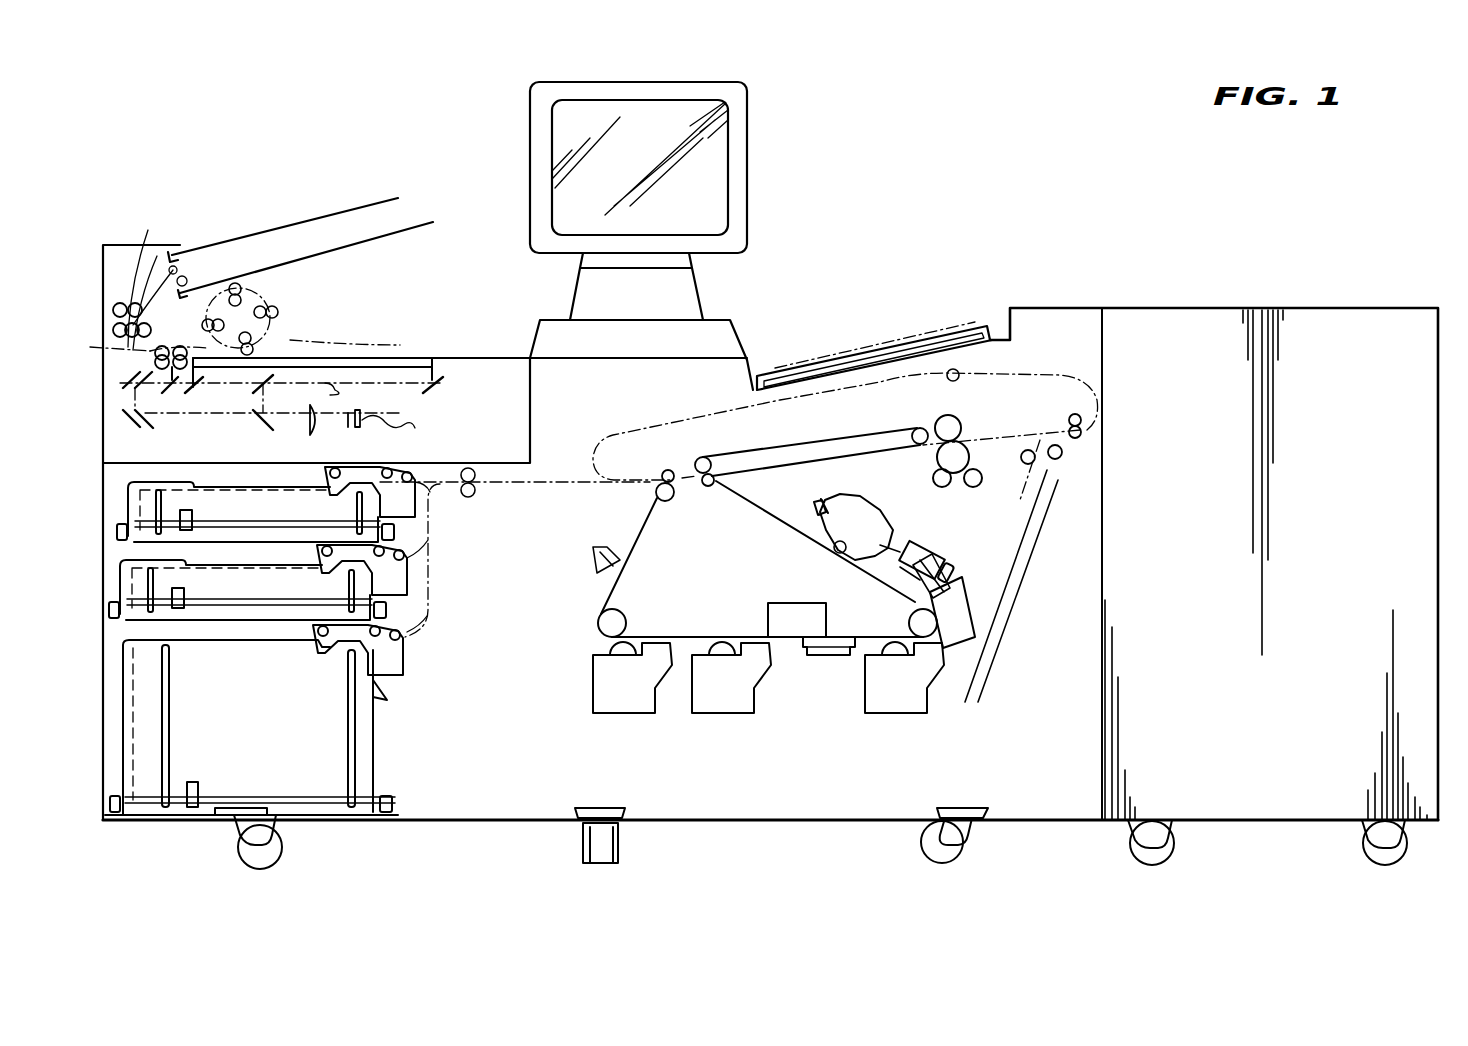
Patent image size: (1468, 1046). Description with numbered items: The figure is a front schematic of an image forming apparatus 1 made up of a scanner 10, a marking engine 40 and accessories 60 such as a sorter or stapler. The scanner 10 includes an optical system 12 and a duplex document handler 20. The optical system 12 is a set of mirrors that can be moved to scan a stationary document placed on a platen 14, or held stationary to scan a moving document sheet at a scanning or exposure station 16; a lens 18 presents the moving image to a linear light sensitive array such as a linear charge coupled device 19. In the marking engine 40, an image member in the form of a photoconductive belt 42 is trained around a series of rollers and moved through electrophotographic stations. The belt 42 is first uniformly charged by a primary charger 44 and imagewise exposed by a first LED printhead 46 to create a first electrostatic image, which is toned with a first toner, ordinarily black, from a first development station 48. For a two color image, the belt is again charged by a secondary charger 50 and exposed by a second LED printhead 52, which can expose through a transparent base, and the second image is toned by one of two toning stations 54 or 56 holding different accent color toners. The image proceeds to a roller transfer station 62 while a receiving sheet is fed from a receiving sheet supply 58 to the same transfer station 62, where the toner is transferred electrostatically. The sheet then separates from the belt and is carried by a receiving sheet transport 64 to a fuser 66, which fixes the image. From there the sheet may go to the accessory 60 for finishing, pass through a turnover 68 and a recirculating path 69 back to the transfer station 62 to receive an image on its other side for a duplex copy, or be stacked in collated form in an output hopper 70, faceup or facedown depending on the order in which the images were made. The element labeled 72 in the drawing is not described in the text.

The image forming apparatus 1 is at (1017, 128).
The scanner 10 is at (222, 212).
The optical system 12 is at (125, 403).
The platen 14 is at (388, 358).
The scanning or exposure station 16 is at (168, 335).
The lens 18 is at (333, 383).
The linear charge coupled device 19 is at (407, 428).
The duplex document handler 20 is at (117, 274).
The marking engine 40 is at (1035, 795).
The photoconductive belt 42 is at (753, 497).
The primary charger 44 is at (918, 545).
The first LED printhead 46 is at (995, 608).
The first development station 48 is at (907, 703).
The secondary charger 50 is at (825, 647).
The second LED printhead 52 is at (792, 610).
The toning station 54 is at (735, 702).
The toning station 56 is at (642, 698).
The receiving sheet supply 58 is at (455, 611).
The accessories 60 is at (1363, 320).
The roller transfer station 62 is at (653, 492).
The receiving sheet transport 64 is at (827, 443).
The fuser 66 is at (952, 425).
The turnover 68 is at (1050, 483).
The recirculating path 69 is at (628, 432).
The output hopper 70 is at (930, 322).
The transfer unit 72 is at (862, 517).